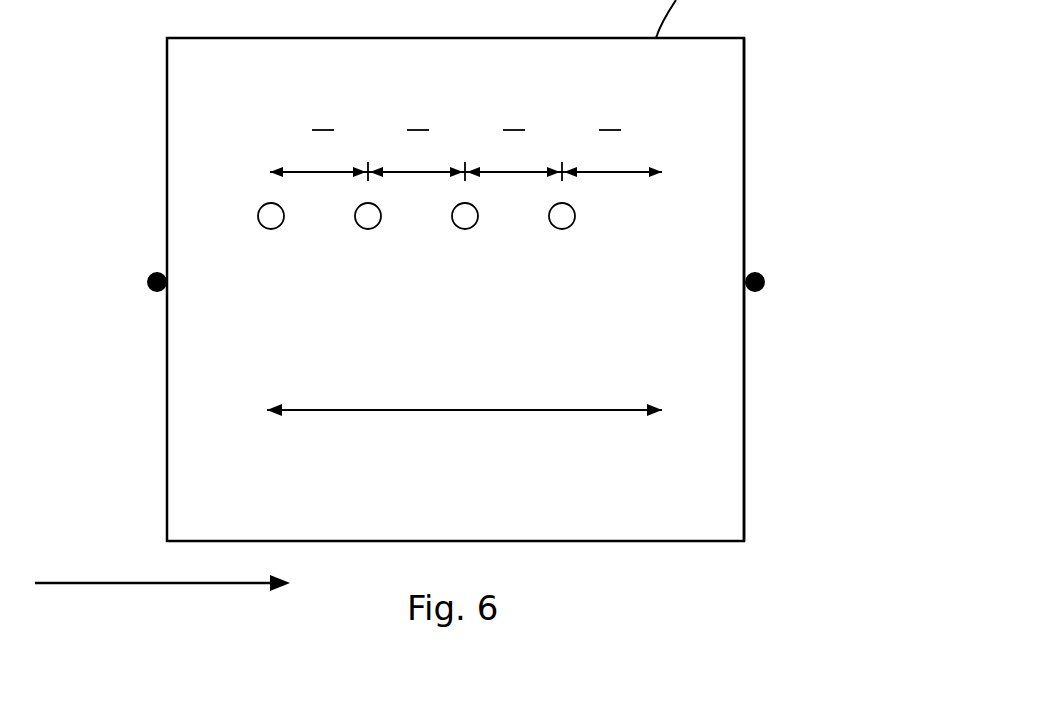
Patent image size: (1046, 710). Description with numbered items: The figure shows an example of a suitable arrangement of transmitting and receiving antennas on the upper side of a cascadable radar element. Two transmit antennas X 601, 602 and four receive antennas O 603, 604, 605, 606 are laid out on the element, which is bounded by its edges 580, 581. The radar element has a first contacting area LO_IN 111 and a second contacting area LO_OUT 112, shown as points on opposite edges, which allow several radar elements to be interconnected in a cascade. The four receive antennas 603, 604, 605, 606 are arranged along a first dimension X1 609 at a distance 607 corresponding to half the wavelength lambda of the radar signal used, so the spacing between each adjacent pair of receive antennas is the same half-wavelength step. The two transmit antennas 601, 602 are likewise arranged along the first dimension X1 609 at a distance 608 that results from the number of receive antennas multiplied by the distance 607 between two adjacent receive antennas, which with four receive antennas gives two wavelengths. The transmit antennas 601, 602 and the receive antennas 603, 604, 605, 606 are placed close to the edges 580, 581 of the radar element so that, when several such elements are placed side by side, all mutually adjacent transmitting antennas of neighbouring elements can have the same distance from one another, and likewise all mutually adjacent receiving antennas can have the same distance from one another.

The first contacting area LO_IN 111 is at (152, 291).
The second contacting area LO_OUT 112 is at (758, 272).
The edge 580 is at (165, 218).
The edge 581 is at (745, 381).
The transmit antenna 601 is at (268, 372).
The transmit antenna 602 is at (649, 365).
The receive antenna 603 is at (272, 229).
The receive antenna 604 is at (369, 229).
The receive antenna 605 is at (468, 229).
The receive antenna 606 is at (568, 228).
The distance 607 is at (465, 100).
The distance 608 is at (422, 466).
The first dimension X1 609 is at (120, 597).